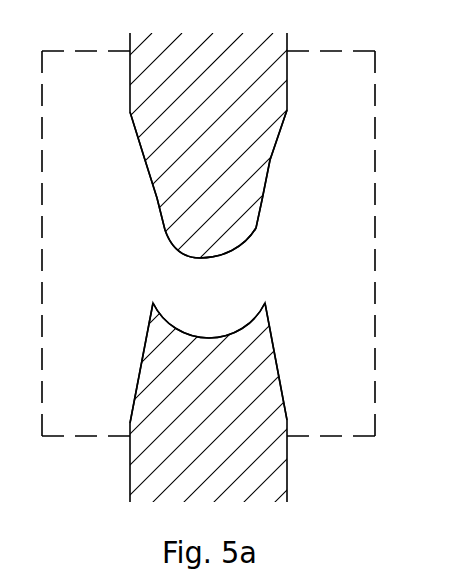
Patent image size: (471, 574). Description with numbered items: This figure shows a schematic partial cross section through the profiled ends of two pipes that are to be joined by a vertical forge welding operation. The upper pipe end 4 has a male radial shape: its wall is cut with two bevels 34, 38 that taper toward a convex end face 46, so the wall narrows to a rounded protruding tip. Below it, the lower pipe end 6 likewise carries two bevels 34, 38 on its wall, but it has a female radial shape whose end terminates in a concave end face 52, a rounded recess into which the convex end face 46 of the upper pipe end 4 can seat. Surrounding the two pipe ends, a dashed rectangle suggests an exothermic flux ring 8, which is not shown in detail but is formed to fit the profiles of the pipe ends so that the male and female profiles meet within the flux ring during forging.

The upper pipe end 4 is at (130, 103).
The lower pipe end 6 is at (130, 462).
The exothermic flux ring 8 is at (376, 278).
The bevel 34 is at (146, 165).
The bevel 38 is at (269, 163).
The convex end face 46 is at (208, 256).
The concave end face 52 is at (210, 337).